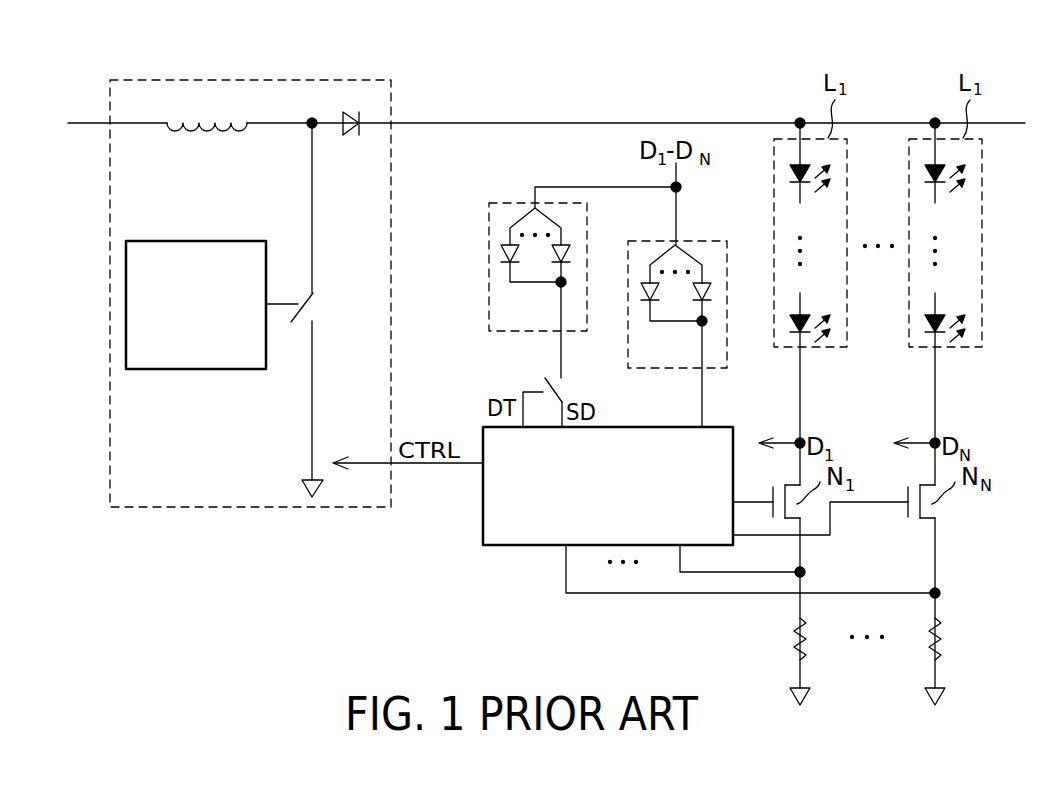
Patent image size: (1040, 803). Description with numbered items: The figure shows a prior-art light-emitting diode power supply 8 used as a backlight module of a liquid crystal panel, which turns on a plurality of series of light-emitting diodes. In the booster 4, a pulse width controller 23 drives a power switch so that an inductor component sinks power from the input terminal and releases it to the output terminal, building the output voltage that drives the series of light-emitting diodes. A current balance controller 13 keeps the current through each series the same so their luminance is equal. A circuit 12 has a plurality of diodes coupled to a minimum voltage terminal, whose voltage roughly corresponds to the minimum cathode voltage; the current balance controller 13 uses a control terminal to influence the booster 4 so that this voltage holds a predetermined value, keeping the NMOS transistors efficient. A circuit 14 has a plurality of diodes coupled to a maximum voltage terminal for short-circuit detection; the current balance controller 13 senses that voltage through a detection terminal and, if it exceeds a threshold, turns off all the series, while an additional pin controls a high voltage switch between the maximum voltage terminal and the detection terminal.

The light-emitting diode power supply 8 is at (680, 68).
The booster 4 is at (296, 80).
The pulse width controller 23 is at (201, 241).
The circuit 14 is at (521, 332).
The circuit 12 is at (661, 369).
The current balance controller 13 is at (505, 546).